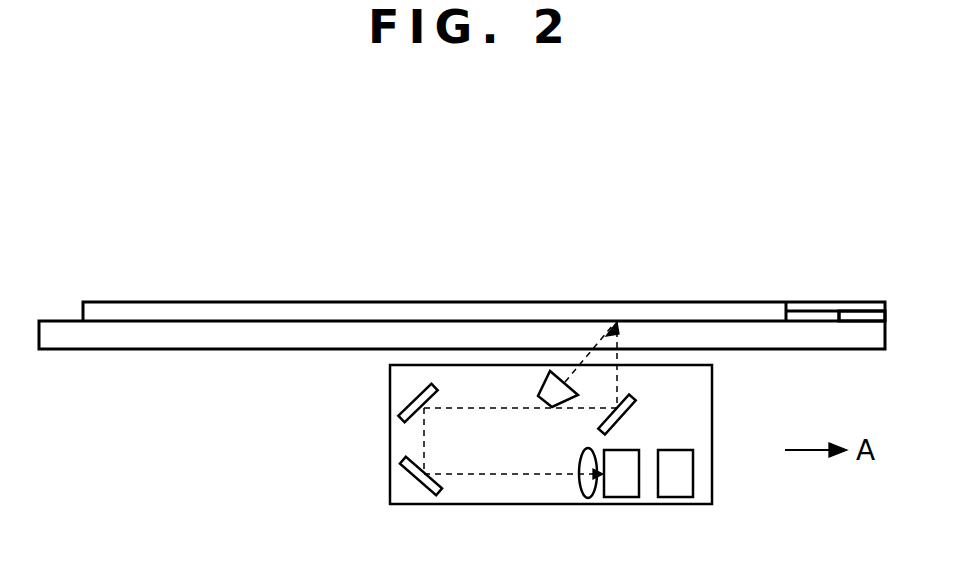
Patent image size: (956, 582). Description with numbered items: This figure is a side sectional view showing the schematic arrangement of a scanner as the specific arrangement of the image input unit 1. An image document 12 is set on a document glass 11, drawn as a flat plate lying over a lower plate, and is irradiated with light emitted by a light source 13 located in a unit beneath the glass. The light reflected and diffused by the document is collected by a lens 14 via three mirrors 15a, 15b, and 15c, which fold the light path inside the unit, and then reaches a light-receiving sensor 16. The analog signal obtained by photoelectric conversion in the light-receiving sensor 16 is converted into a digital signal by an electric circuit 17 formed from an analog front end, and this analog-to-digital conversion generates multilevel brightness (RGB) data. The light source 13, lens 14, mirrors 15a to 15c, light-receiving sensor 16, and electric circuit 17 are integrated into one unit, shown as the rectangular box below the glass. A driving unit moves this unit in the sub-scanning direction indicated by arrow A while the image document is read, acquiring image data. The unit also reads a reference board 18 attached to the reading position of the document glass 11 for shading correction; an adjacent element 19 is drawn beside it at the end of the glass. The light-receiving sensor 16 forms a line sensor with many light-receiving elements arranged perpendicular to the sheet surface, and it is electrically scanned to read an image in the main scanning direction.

The image input unit 1 is at (522, 208).
The document glass 11 is at (185, 337).
The image document 12 is at (185, 308).
The light source 13 is at (545, 383).
The lens 14 is at (587, 495).
The mirror 15a is at (630, 410).
The mirror 15b is at (416, 398).
The mirror 15c is at (420, 482).
The light-receiving sensor 16 is at (627, 488).
The electric circuit 17 is at (677, 487).
The reference board 18 is at (810, 313).
The white reference plate 19 is at (857, 317).